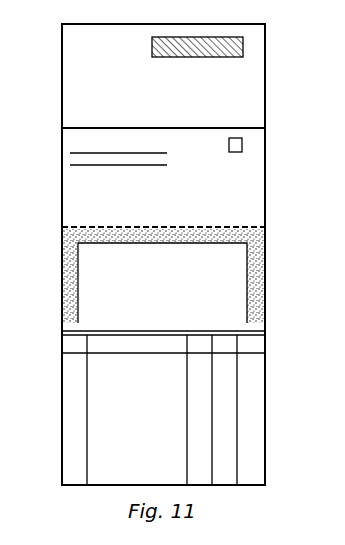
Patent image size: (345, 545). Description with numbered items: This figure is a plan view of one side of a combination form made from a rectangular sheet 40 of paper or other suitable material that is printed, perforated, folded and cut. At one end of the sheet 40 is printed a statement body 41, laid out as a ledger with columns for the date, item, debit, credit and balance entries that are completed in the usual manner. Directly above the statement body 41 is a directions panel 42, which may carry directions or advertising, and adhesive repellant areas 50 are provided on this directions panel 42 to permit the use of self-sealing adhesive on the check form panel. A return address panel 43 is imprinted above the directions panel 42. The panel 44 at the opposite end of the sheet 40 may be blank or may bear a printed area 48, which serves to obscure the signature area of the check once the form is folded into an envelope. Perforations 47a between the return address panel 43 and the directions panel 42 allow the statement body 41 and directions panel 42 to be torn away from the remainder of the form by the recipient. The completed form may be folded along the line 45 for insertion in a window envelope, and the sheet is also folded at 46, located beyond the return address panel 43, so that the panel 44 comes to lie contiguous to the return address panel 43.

The sheet 40 is at (62, 63).
The panel 44 is at (246, 94).
The printed area 48 is at (152, 56).
The return address panel 43 is at (254, 195).
The perforations 47a is at (77, 226).
The adhesive repellant areas 50 is at (63, 268).
The directions panel 42 is at (238, 293).
The fold line 45 is at (258, 333).
The statement body 41 is at (255, 425).
The fold 46 is at (306, 544).